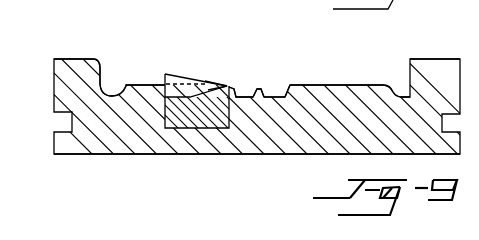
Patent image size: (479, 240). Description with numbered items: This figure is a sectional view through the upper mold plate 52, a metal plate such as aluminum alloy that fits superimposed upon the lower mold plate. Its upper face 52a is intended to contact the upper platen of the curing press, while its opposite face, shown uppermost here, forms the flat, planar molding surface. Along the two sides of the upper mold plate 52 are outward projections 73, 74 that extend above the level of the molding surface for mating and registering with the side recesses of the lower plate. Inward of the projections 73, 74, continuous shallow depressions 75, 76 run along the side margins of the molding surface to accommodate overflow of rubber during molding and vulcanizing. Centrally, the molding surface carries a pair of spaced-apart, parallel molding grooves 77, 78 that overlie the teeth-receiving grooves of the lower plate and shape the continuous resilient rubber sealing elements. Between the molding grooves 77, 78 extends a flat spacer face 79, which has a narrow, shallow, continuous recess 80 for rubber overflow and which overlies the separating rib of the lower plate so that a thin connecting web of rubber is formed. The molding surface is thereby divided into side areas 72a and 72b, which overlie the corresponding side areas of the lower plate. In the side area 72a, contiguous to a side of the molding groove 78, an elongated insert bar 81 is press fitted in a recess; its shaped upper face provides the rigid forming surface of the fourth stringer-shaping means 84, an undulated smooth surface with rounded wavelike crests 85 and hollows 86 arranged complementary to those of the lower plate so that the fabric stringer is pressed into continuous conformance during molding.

The upper mold plate 52 is at (122, 140).
The upper face 52a is at (203, 155).
The side area 72a is at (157, 82).
The side area 72b is at (352, 84).
The outward projection 73 is at (448, 60).
The outward projection 74 is at (61, 58).
The shallow depression 75 is at (400, 96).
The shallow depression 76 is at (117, 95).
The molding groove 77 is at (291, 85).
The molding groove 78 is at (240, 93).
The spacer face 79 is at (257, 89).
The recess 80 is at (273, 94).
The insert bar 81 is at (180, 124).
The fourth stringer-shaping means 84 is at (210, 72).
The crest 85 is at (178, 92).
The hollow 86 is at (185, 93).